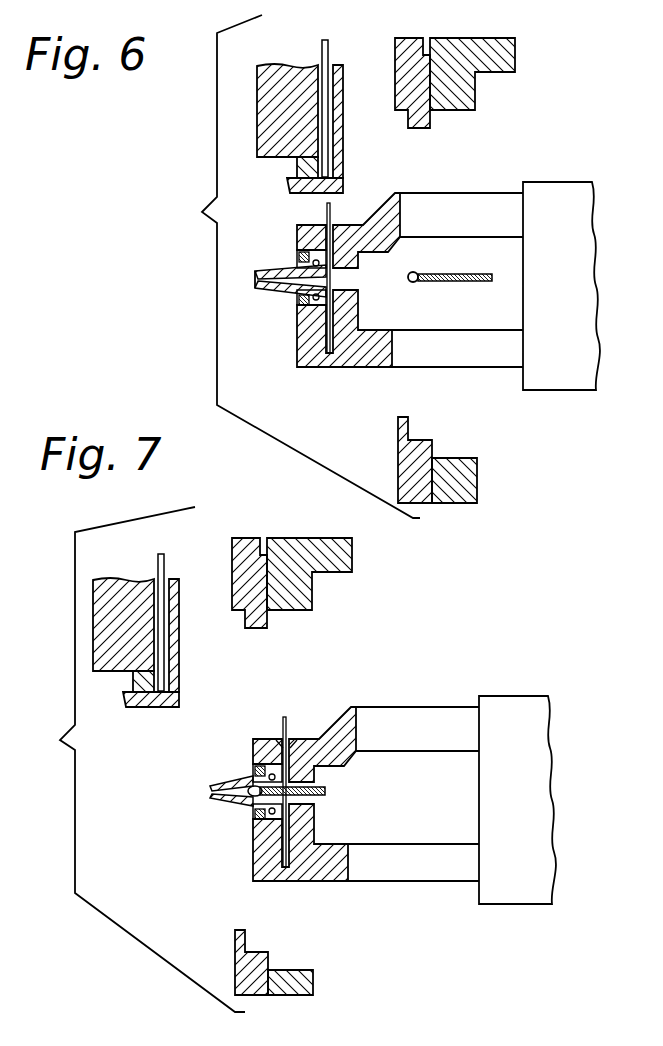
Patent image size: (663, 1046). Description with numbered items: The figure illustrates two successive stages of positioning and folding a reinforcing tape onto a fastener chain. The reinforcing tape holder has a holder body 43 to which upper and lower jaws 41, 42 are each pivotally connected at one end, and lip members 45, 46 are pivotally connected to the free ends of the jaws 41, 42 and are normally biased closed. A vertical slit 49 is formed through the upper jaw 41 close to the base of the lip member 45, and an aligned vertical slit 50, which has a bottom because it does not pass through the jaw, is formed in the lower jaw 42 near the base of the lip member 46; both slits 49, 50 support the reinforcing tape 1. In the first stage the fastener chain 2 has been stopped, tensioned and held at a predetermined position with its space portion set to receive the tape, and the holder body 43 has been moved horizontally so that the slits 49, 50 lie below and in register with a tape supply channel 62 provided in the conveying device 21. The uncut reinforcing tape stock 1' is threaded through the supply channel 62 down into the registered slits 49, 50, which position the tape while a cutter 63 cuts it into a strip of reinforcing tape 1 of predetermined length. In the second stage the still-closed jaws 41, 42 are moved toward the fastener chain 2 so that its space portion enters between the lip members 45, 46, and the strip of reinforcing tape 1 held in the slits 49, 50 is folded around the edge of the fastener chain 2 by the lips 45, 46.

In FIG. 6, the reinforcing tape 1 is at (342, 273).
In FIG. 7, the reinforcing tape 1 is at (310, 792).
In FIG. 6, the reinforcing tape stock 1' is at (342, 103).
In FIG. 7, the reinforcing tape stock 1' is at (180, 610).
In FIG. 6, the fastener chain 2 is at (445, 283).
In FIG. 7, the fastener chain 2 is at (323, 788).
In FIG. 6, the conveying device 21 is at (356, 117).
In FIG. 7, the conveying device 21 is at (181, 636).
In FIG. 6, the upper jaw 41 is at (455, 193).
In FIG. 7, the upper jaw 41 is at (433, 691).
In FIG. 6, the lower jaw 42 is at (453, 367).
In FIG. 7, the lower jaw 42 is at (386, 880).
In FIG. 6, the holder body 43 is at (573, 182).
In FIG. 7, the holder body 43 is at (517, 800).
In FIG. 7, the upper lip member 45 is at (228, 787).
In FIG. 7, the lower lip member 46 is at (225, 802).
In FIG. 6, the vertical slit 49 is at (321, 223).
In FIG. 6, the vertical slit 50 is at (320, 338).
In FIG. 6, the tape supply channel 62 is at (316, 78).
In FIG. 7, the tape supply channel 62 is at (165, 598).
In FIG. 6, the cutter 63 is at (343, 188).
In FIG. 7, the cutter 63 is at (181, 697).